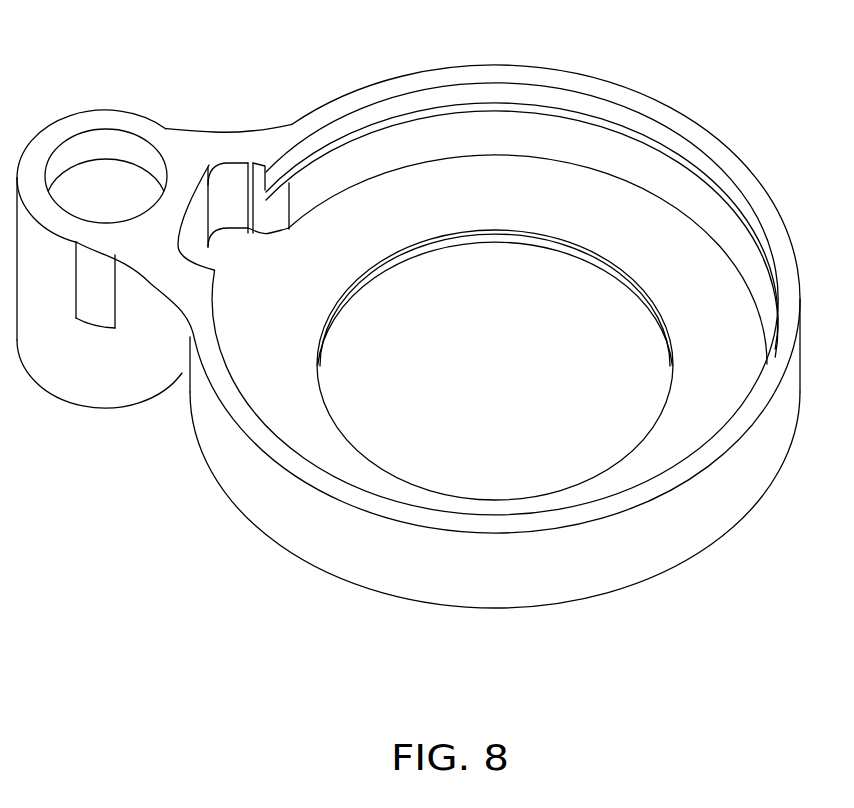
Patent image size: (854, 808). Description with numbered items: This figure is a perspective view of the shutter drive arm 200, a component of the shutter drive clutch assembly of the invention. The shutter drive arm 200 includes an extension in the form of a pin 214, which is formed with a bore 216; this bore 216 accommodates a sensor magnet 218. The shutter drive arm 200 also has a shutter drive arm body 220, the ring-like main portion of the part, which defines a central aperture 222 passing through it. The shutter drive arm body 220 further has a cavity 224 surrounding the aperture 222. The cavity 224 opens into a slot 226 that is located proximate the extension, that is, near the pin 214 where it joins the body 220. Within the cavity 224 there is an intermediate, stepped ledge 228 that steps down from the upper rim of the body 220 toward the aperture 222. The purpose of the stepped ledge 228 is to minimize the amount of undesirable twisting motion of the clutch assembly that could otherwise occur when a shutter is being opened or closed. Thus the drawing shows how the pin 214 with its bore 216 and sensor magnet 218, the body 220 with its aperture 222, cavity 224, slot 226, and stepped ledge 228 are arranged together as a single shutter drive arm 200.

The shutter drive arm 200 is at (702, 112).
The pin 214 is at (25, 143).
The bore 216 is at (99, 148).
The sensor magnet 218 is at (113, 187).
The shutter drive arm body 220 is at (517, 610).
The aperture 222 is at (407, 449).
The cavity 224 is at (343, 167).
The slot 226 is at (233, 180).
The stepped ledge 228 is at (455, 107).